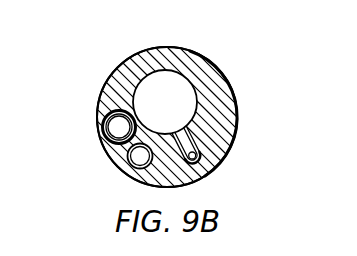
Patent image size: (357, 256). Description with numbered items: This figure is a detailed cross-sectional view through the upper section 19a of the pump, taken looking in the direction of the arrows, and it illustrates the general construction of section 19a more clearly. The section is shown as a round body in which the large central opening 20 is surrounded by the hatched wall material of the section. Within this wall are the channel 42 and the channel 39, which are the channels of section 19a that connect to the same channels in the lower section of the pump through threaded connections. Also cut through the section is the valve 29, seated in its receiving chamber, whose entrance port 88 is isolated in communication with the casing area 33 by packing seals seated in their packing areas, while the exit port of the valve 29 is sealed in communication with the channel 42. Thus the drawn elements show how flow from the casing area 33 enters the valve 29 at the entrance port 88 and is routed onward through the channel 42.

The section 19a is at (92, 79).
The casing area 33 is at (266, 58).
The central bore 20 is at (178, 104).
The valve 29 is at (103, 120).
The entrance port 88 is at (105, 134).
The channel 42 is at (133, 166).
The channel 39 is at (204, 162).